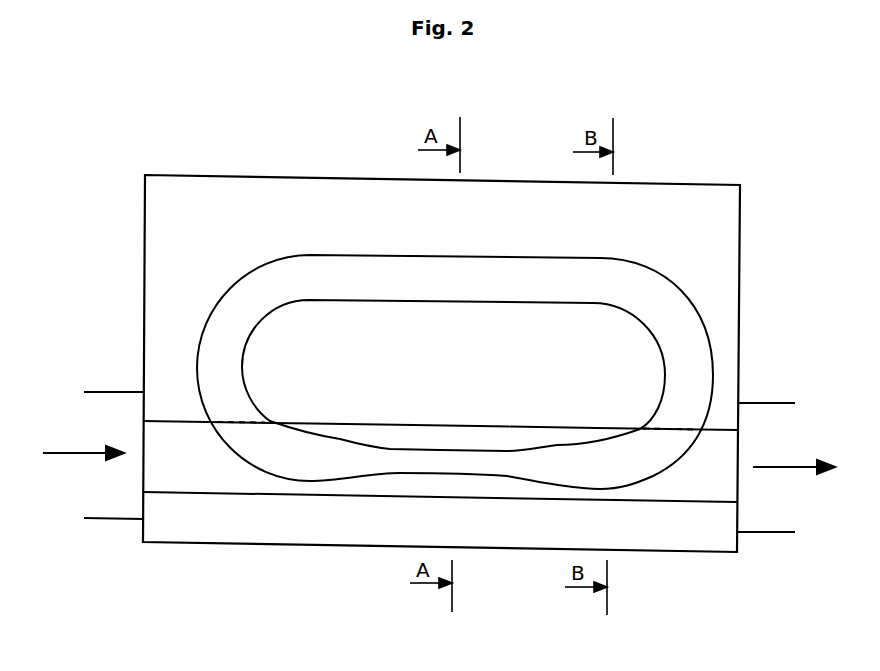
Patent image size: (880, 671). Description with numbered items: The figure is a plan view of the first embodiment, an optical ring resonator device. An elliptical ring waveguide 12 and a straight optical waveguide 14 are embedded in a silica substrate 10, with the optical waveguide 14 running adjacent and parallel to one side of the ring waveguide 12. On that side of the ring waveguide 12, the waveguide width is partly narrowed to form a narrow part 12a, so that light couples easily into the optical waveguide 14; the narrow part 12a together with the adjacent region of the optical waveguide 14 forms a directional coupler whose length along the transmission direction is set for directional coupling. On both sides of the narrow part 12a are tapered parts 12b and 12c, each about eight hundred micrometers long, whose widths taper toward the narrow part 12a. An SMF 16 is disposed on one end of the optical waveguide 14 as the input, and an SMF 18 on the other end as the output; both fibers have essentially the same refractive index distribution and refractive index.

The silica substrate 10 is at (724, 230).
The elliptical ring waveguide 12 is at (333, 268).
The narrow part 12a is at (510, 416).
The tapered part 12b is at (397, 416).
The tapered part 12c is at (597, 416).
The optical waveguide 14 is at (189, 466).
The SMF 16 is at (100, 495).
The SMF 18 is at (757, 507).